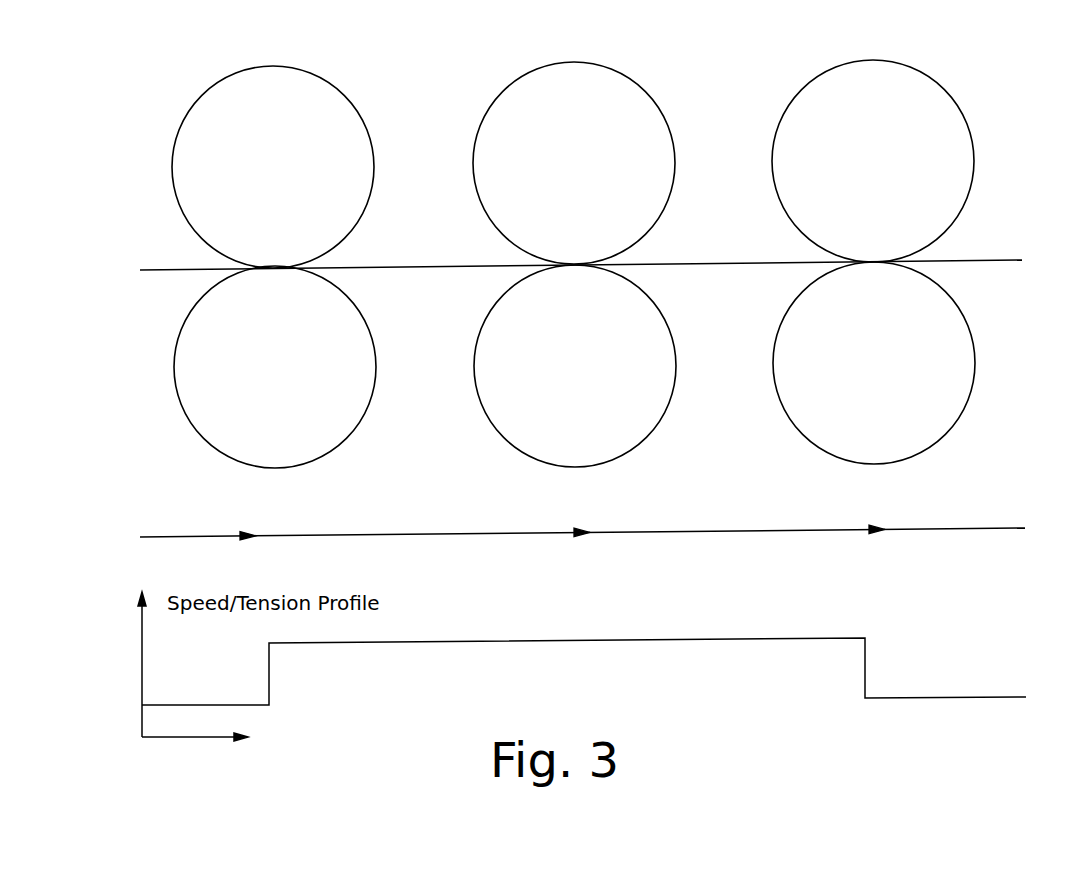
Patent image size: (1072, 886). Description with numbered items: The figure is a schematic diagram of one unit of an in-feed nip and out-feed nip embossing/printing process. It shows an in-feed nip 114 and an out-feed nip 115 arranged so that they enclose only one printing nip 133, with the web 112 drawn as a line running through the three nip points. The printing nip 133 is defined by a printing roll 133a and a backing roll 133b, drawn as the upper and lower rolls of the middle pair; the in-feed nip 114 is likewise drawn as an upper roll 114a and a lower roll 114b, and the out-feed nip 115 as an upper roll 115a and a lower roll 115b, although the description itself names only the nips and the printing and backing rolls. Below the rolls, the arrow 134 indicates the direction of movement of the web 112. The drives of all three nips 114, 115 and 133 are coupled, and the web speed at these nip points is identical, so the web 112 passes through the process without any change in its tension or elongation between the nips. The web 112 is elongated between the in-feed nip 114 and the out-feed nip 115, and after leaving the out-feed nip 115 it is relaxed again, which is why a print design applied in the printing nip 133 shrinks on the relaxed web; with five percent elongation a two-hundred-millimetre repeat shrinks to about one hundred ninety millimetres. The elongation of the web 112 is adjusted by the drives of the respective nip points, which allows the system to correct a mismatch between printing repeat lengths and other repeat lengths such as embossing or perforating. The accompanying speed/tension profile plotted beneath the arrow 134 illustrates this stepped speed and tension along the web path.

The web 112 is at (164, 272).
The in-feed nip 114 is at (307, 258).
The upper roller of first pair 114a is at (316, 97).
The lower roller of first pair 114b is at (315, 440).
The printing nip 133 is at (599, 258).
The printing roll 133a is at (620, 95).
The backing roll 133b is at (602, 437).
The out-feed nip 115 is at (906, 256).
The upper roller of third pair 115a is at (917, 93).
The lower roller of third pair 115b is at (913, 435).
The arrow 134 is at (507, 536).